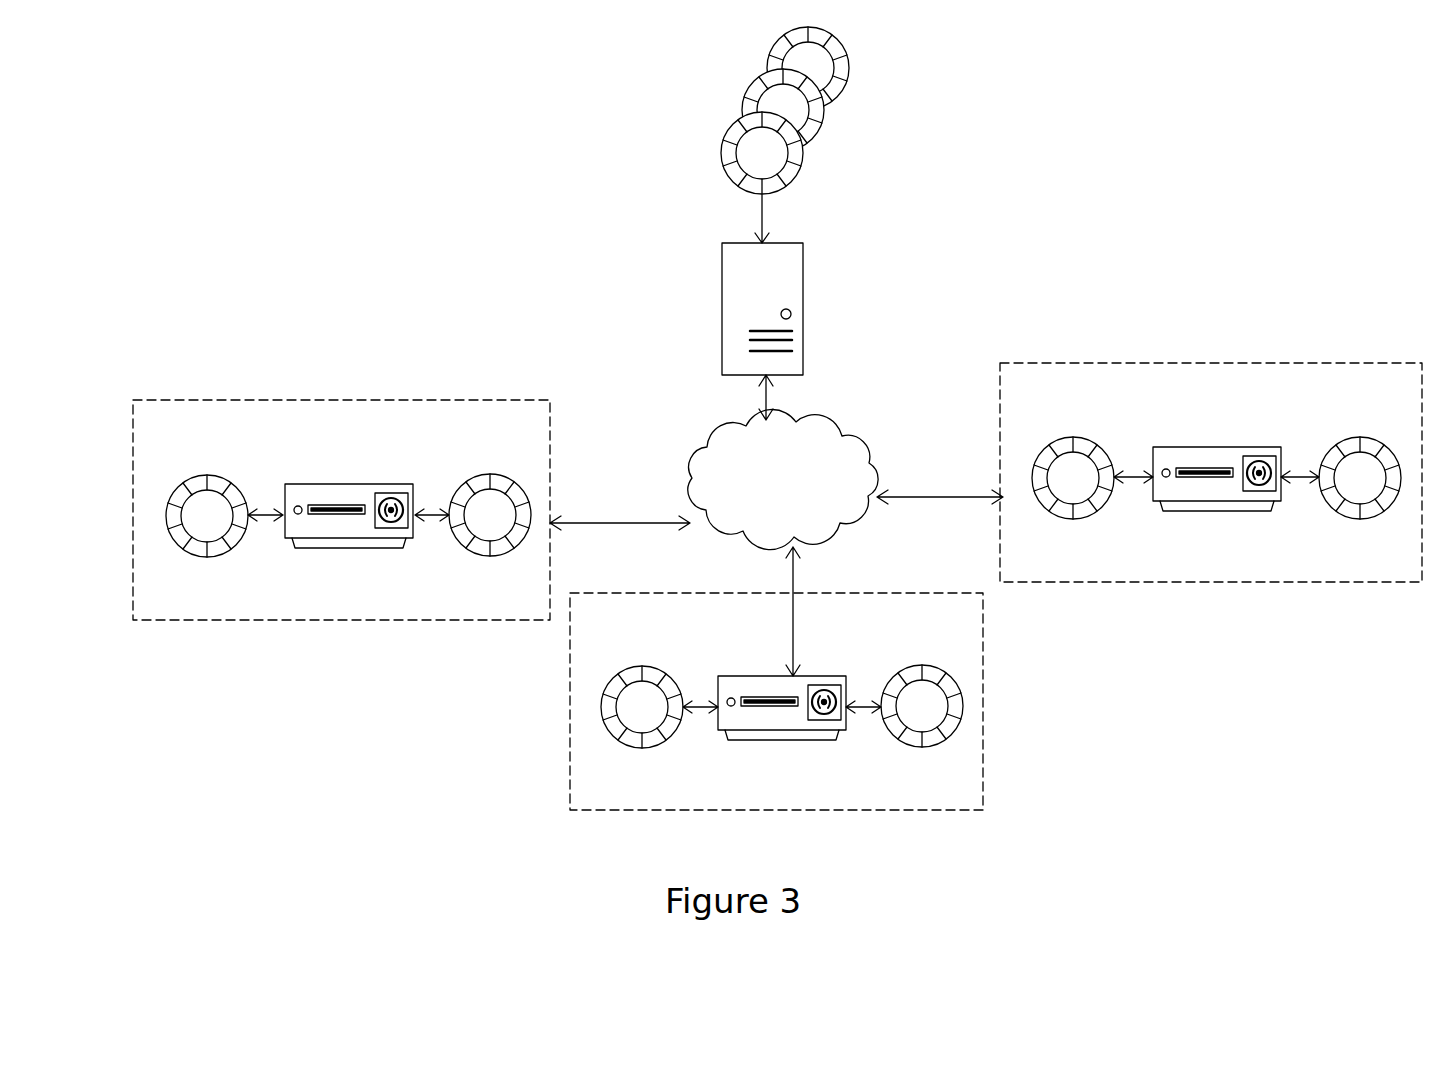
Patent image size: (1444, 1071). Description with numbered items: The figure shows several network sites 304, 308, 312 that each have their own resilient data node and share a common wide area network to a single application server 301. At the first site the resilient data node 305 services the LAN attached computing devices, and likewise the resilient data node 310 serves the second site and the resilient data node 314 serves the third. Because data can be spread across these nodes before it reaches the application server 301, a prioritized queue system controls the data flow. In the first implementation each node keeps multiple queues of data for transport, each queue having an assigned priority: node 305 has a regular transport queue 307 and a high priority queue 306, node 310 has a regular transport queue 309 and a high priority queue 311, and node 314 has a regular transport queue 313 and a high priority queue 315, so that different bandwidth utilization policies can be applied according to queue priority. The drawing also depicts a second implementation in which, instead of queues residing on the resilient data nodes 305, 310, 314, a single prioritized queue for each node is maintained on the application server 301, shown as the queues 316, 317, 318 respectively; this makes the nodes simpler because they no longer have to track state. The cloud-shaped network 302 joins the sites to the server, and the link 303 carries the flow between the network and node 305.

The application server 301 is at (722, 335).
The network cloud 302 is at (845, 415).
The communication link 303 is at (797, 573).
The network site 304 is at (847, 823).
The resilient data node 305 is at (796, 743).
The high priority queue 306 is at (934, 755).
The regular transport queue 307 is at (666, 755).
The network site 308 is at (1230, 582).
The regular transport queue 309 is at (1097, 530).
The resilient data node 310 is at (1232, 515).
The high priority queue 311 is at (1370, 528).
The network site 312 is at (268, 625).
The regular transport queue 313 is at (232, 565).
The resilient data node 314 is at (363, 550).
The high priority queue 315 is at (506, 563).
The prioritized queue 316 is at (795, 185).
The prioritized queue 317 is at (812, 143).
The prioritized queue 318 is at (843, 102).